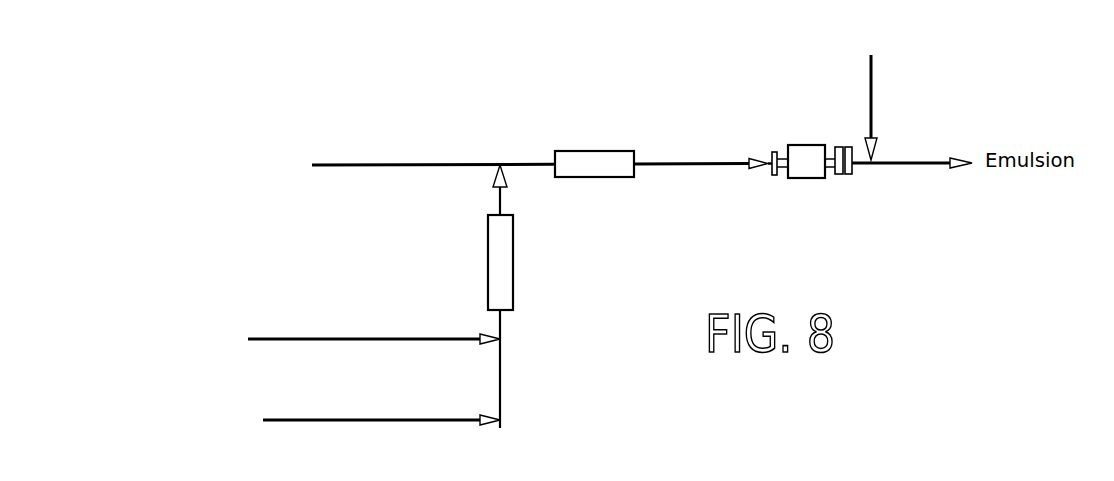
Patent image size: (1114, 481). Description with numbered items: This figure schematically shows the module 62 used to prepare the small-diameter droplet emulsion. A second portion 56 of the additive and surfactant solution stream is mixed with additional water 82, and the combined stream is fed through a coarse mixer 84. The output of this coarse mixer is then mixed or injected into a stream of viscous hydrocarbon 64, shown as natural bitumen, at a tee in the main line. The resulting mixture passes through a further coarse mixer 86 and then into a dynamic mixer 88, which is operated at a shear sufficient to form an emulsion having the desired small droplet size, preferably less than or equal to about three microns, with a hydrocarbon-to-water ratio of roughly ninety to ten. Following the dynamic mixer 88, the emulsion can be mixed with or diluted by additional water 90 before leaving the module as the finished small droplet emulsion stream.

The second portion 56 is at (398, 422).
The module 62 is at (284, 228).
The viscous hydrocarbon 64 is at (448, 165).
The additional water 82 is at (400, 338).
The coarse mixer 84 is at (513, 256).
The coarse mixer 86 is at (602, 151).
The dynamic mixer 88 is at (803, 145).
The additional water 90 is at (872, 92).